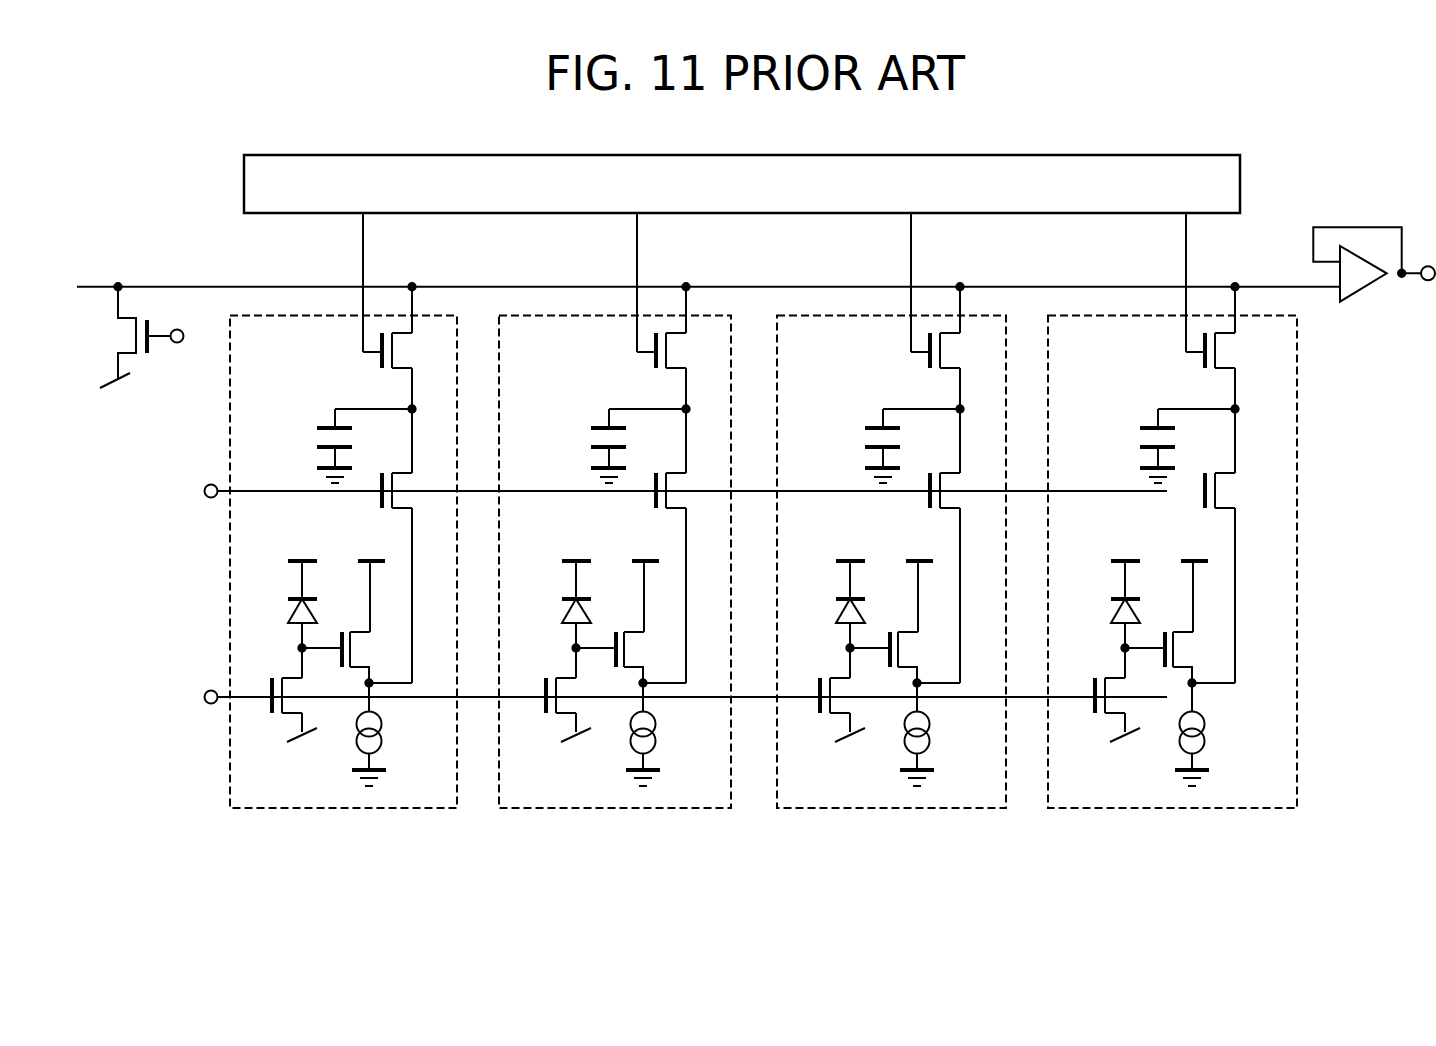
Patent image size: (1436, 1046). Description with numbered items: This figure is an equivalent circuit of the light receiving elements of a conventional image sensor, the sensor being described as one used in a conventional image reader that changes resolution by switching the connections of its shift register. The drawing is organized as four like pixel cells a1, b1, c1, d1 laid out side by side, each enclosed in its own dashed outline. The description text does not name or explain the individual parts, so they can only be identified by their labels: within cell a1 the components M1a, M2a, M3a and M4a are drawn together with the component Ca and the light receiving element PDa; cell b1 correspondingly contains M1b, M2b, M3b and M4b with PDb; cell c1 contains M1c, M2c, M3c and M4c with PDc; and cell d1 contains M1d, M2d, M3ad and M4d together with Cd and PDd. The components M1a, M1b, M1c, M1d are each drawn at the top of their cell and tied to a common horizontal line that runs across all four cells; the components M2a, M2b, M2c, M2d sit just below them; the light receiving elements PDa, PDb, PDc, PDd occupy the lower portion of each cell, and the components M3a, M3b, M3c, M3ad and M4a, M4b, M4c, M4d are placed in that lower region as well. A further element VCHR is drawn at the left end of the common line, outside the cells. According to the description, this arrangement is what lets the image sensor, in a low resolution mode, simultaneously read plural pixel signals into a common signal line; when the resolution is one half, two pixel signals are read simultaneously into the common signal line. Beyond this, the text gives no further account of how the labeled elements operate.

The charge transistor (cell a1) M1a is at (347, 351).
The charge transistor (cell b1) M1b is at (621, 351).
The charge transistor (cell c1) M1c is at (895, 351).
The charge transistor (cell d1) M1d is at (1170, 351).
The transfer transistor (cell a1) M2a is at (350, 505).
The transfer transistor (cell b1) M2b is at (624, 505).
The transfer transistor (cell c1) M2c is at (898, 505).
The transfer transistor (cell d1) M2d is at (1173, 505).
The amplifying transistor with current source (cell a1) M3a is at (375, 673).
The amplifying transistor with current source (cell b1) M3b is at (650, 673).
The amplifying transistor with current source (cell c1) M3c is at (922, 673).
The amplifying transistor with current source (cell d1) M3ad is at (1207, 673).
The reset transistor (cell a1) M4a is at (280, 722).
The reset transistor (cell b1) M4b is at (554, 722).
The reset transistor (cell c1) M4c is at (828, 722).
The reset transistor (cell d1) M4d is at (1103, 722).
The storage capacitor (cell a1) Ca is at (311, 428).
The storage capacitor (cell d1) Cd is at (1134, 428).
The photodiode (cell a1) PDa is at (276, 606).
The photodiode (cell b1) PDb is at (550, 606).
The photodiode (cell c1) PDc is at (824, 606).
The photodiode (cell d1) PDd is at (1099, 606).
The pixel cell a1 is at (343, 595).
The pixel cell b1 is at (615, 595).
The pixel cell c1 is at (891, 595).
The pixel cell d1 is at (1172, 595).
The charge voltage transistor VCHR is at (146, 351).